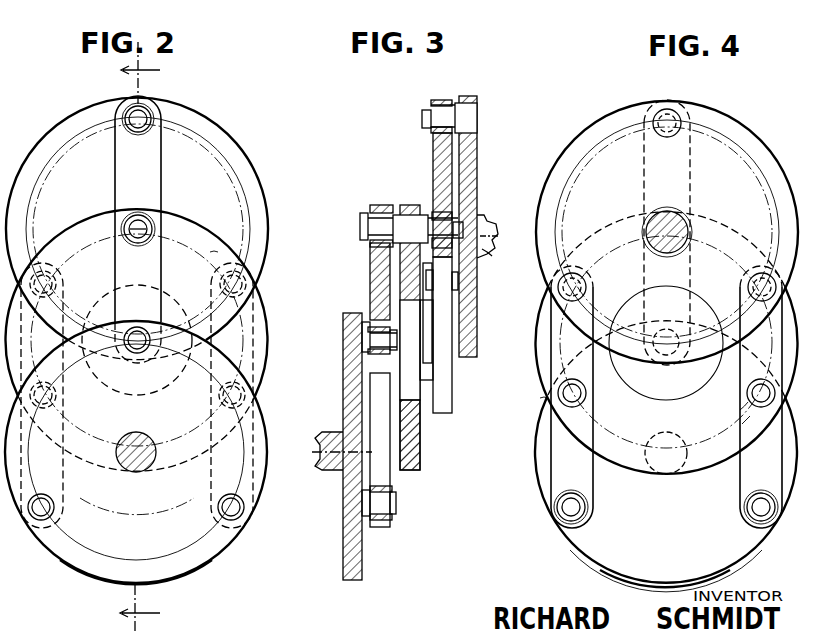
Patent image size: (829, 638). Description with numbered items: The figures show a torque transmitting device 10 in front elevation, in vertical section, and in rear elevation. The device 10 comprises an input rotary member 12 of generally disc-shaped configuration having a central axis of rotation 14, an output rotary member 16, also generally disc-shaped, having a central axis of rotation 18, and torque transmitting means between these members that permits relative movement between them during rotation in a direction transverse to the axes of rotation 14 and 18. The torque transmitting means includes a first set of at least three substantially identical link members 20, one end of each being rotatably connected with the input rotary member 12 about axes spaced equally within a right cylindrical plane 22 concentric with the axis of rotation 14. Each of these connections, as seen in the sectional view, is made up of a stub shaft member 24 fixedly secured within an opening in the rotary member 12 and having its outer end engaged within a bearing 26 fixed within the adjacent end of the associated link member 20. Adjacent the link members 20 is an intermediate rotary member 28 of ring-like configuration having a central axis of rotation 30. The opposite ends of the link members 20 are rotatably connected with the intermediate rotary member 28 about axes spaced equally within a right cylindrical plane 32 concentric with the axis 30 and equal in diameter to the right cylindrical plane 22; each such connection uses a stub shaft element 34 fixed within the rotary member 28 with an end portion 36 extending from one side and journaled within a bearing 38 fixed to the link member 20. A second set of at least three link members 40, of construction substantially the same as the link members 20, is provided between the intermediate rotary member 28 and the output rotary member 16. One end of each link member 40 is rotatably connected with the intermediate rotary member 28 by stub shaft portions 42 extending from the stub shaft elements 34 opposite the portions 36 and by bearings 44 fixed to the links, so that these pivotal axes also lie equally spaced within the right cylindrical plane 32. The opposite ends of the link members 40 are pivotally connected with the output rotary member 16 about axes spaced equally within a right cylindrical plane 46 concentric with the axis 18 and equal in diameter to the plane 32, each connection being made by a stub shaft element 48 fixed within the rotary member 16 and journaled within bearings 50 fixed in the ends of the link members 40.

In FIG. 2, the torque transmitting device 10 is at (262, 88).
In FIG. 3, the torque transmitting device 10 is at (514, 116).
In FIG. 4, the torque transmitting device 10 is at (766, 115).
In FIG. 2, the input rotary member 12 is at (136, 464).
In FIG. 3, the input rotary member 12 is at (360, 447).
In FIG. 4, the input rotary member 12 is at (666, 420).
In FIG. 2, the central axis of rotation 14 is at (134, 473).
In FIG. 3, the central axis of rotation 14 is at (342, 461).
In FIG. 4, the central axis of rotation 14 is at (662, 475).
In FIG. 2, the output rotary member 16 is at (145, 229).
In FIG. 3, the output rotary member 16 is at (478, 162).
In FIG. 4, the output rotary member 16 is at (667, 224).
In FIG. 2, the central axis of rotation 18 is at (156, 226).
In FIG. 3, the central axis of rotation 18 is at (480, 228).
In FIG. 4, the central axis of rotation 18 is at (692, 232).
In FIG. 2, the link members 20 is at (150, 270).
In FIG. 3, the link members 20 is at (378, 390).
In FIG. 4, the link members 20 is at (690, 298).
In FIG. 2, the right cylindrical plane 22 is at (228, 546).
In FIG. 4, the right cylindrical plane 22 is at (640, 578).
In FIG. 2, the stub shaft member 24 is at (144, 348).
In FIG. 3, the stub shaft member 24 is at (390, 340).
In FIG. 4, the stub shaft member 24 is at (594, 520).
In FIG. 3, the bearing 26 is at (422, 318).
In FIG. 4, the bearing 26 is at (746, 526).
In FIG. 2, the intermediate rotary member 28 is at (218, 252).
In FIG. 3, the intermediate rotary member 28 is at (422, 450).
In FIG. 4, the intermediate rotary member 28 is at (542, 398).
In FIG. 2, the central axis of rotation 30 is at (130, 354).
In FIG. 4, the central axis of rotation 30 is at (662, 358).
In FIG. 2, the right cylindrical plane 32 is at (196, 430).
In FIG. 4, the right cylindrical plane 32 is at (606, 420).
In FIG. 3, the stub shaft element 34 is at (412, 226).
In FIG. 2, the end portion 36 is at (124, 224).
In FIG. 3, the end portion 36 is at (364, 230).
In FIG. 2, the bearing 38 is at (147, 216).
In FIG. 3, the bearing 38 is at (380, 212).
In FIG. 2, the link members 40 is at (162, 142).
In FIG. 3, the link members 40 is at (432, 150).
In FIG. 4, the link members 40 is at (640, 172).
In FIG. 3, the stub shaft portions 42 is at (488, 258).
In FIG. 4, the stub shaft portions 42 is at (744, 410).
In FIG. 3, the bearings 44 is at (492, 240).
In FIG. 4, the bearings 44 is at (748, 424).
In FIG. 2, the right cylindrical plane 46 is at (64, 160).
In FIG. 4, the right cylindrical plane 46 is at (696, 162).
In FIG. 2, the stub shaft element 48 is at (146, 110).
In FIG. 3, the stub shaft element 48 is at (465, 112).
In FIG. 4, the stub shaft element 48 is at (674, 116).
In FIG. 2, the bearings 50 is at (132, 104).
In FIG. 3, the bearings 50 is at (432, 102).